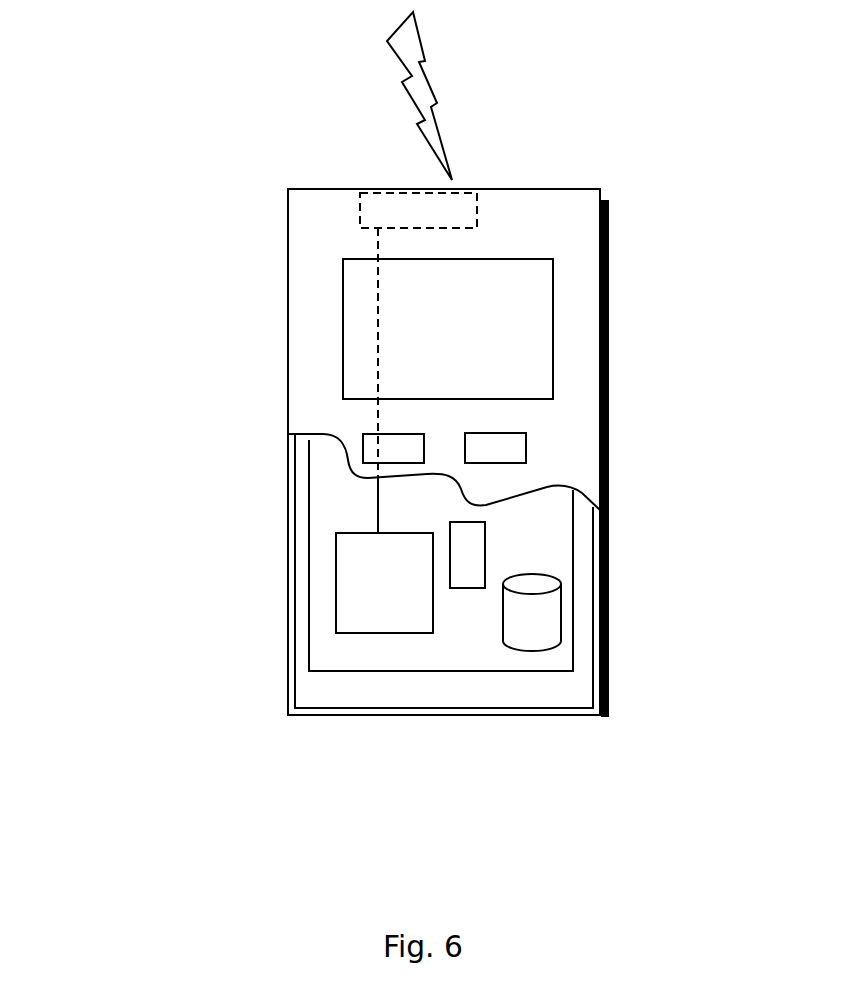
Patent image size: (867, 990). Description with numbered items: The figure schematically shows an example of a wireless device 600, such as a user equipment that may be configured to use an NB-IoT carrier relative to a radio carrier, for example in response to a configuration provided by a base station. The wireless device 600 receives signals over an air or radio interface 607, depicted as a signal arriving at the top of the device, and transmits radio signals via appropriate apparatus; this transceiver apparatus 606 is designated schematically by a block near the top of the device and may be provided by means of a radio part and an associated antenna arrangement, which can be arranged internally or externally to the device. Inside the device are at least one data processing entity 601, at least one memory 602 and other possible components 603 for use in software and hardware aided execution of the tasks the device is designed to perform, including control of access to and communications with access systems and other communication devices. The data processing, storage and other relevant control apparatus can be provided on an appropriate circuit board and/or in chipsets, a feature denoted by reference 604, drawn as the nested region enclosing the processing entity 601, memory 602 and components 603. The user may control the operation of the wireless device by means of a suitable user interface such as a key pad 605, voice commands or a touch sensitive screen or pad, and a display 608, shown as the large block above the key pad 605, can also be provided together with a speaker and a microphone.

The wireless device 600 is at (292, 232).
The data processing entity 601 is at (343, 567).
The memory 602 is at (525, 626).
The other possible components 603 is at (467, 538).
The circuit board and/or chipsets 604 is at (333, 653).
The key pad 605 is at (367, 450).
The transceiver apparatus 606 is at (465, 203).
The air or radio interface 607 is at (456, 112).
The display 608 is at (360, 315).